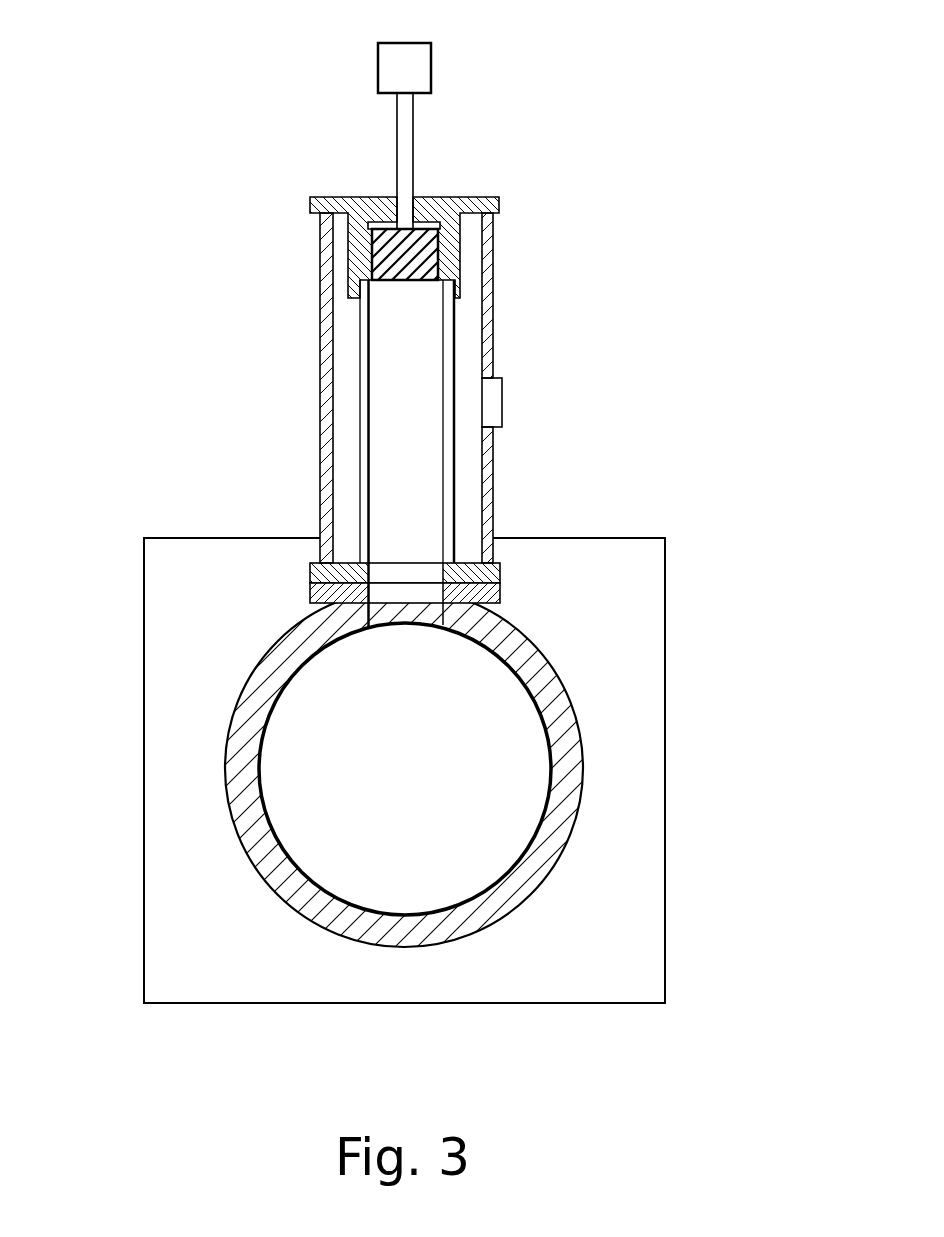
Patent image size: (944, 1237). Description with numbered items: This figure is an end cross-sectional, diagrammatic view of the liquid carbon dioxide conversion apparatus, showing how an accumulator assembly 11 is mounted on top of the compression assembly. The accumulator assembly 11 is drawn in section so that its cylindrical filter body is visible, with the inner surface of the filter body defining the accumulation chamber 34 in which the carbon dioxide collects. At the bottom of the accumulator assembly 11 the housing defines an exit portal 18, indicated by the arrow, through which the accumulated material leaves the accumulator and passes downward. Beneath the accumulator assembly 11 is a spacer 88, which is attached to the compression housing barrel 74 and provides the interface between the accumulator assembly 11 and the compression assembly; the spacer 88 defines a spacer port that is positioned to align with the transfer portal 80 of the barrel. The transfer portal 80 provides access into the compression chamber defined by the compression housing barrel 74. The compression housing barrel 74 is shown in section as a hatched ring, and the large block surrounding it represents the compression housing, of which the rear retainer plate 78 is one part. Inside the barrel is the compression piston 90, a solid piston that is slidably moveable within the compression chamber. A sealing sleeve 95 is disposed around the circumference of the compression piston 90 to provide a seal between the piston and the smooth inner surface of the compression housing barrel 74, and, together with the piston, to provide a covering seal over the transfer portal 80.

The accumulator assembly 11 is at (547, 157).
The accumulation chamber 34 is at (413, 363).
The exit portal 18 is at (386, 592).
The spacer 88 is at (500, 592).
The transfer portal 80 is at (427, 616).
The rear retainer plate 78 is at (665, 632).
The compression piston 90 is at (418, 793).
The sealing sleeve 95 is at (550, 800).
The compression housing barrel 74 is at (242, 785).